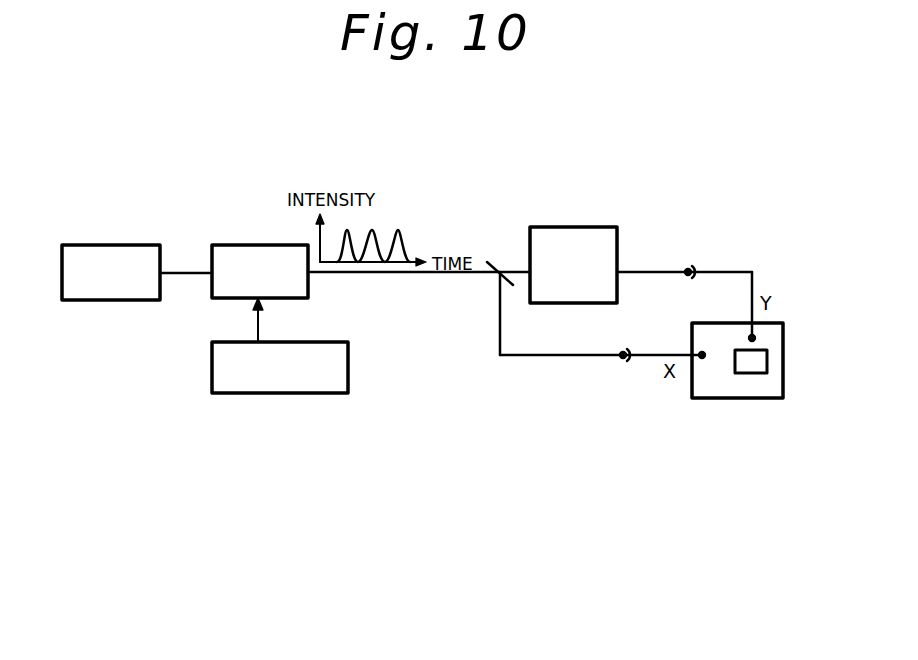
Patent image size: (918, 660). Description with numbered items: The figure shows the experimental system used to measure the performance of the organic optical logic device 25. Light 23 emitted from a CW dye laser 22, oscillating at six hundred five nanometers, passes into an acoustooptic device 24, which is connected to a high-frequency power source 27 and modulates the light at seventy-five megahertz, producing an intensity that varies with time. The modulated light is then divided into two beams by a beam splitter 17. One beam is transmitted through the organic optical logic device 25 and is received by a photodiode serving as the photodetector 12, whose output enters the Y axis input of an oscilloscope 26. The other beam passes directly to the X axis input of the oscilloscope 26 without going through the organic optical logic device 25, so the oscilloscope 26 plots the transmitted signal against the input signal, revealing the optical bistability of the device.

The CW dye laser 22 is at (113, 292).
The light 23 is at (183, 277).
The acoustooptic device 24 is at (257, 249).
The high-frequency power source 27 is at (348, 358).
The beam splitter 17 is at (492, 262).
The organic optical logic device 25 is at (570, 231).
The photodetector 12 is at (697, 265).
The oscilloscope 26 is at (760, 390).